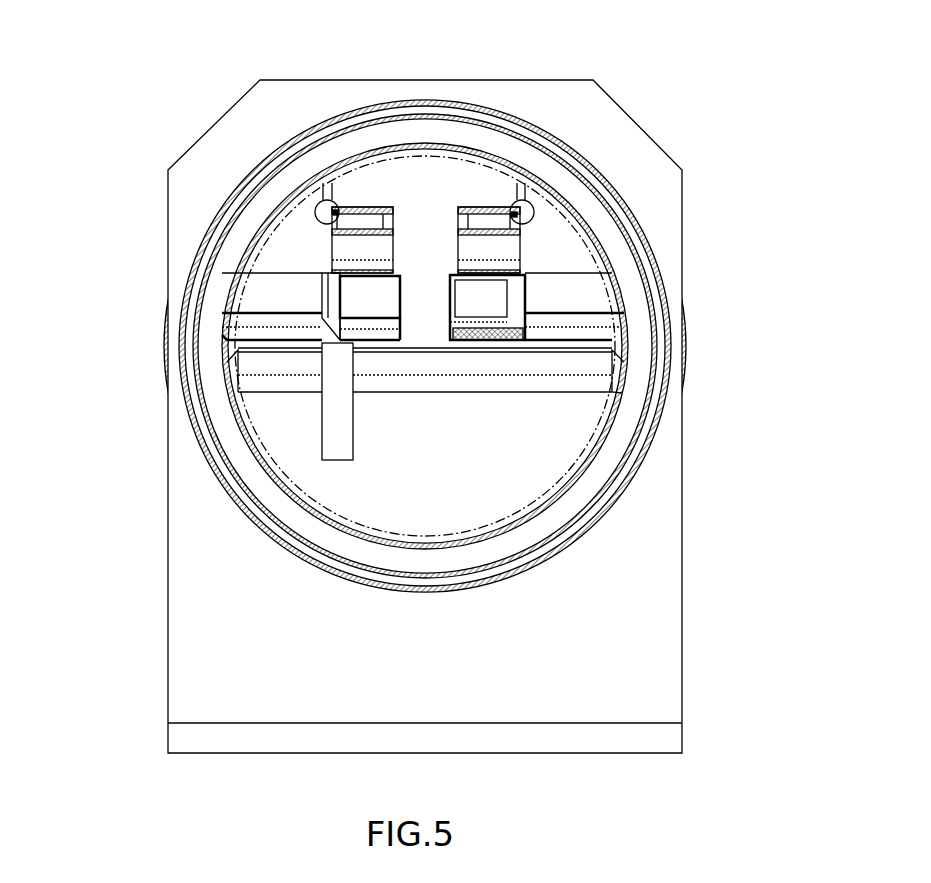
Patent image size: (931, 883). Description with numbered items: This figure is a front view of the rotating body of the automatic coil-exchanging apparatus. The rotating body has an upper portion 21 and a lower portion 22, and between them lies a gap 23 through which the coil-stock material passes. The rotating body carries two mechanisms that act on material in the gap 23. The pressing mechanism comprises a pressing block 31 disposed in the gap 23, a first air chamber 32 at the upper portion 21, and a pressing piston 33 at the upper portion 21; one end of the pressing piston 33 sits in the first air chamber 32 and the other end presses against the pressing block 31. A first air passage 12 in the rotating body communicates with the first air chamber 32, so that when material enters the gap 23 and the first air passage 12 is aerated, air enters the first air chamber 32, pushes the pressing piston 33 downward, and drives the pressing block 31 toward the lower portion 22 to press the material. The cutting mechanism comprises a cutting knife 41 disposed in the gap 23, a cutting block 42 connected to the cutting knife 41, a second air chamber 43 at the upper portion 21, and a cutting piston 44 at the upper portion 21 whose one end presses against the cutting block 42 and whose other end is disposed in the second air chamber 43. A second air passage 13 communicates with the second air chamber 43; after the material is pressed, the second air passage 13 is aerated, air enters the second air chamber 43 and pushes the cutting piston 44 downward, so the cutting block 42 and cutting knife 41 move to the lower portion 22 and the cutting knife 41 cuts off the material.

The first air passage 12 is at (433, 321).
The second air passage 13 is at (312, 148).
The upper portion 21 is at (192, 316).
The lower portion 22 is at (425, 384).
The gap 23 is at (350, 437).
The pressing block 31 is at (606, 319).
The first air chamber 32 is at (493, 149).
The pressing piston 33 is at (600, 277).
The cutting knife 41 is at (236, 269).
The cutting block 42 is at (255, 280).
The second air chamber 43 is at (409, 372).
The cutting piston 44 is at (372, 145).